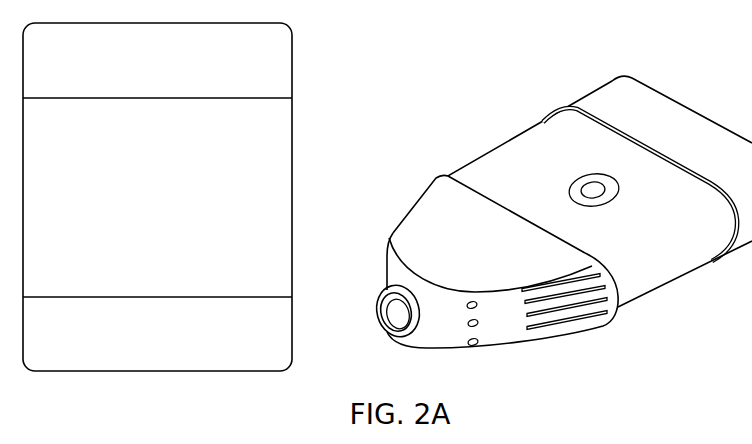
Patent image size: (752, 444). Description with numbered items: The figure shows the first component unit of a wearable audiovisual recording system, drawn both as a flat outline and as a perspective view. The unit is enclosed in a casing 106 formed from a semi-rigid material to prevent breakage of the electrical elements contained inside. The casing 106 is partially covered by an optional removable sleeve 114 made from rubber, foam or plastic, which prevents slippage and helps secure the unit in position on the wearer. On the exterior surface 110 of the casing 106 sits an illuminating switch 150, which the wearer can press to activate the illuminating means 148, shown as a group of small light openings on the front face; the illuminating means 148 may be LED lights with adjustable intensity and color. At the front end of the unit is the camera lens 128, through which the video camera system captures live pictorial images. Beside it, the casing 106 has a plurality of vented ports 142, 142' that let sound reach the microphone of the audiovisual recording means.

The casing 106 is at (273, 157).
The removable sleeve 114 is at (285, 79).
The exterior surface 110 is at (675, 270).
The illuminating switch 150 is at (570, 187).
The camera lens 128 is at (396, 327).
The illuminating means 148 is at (466, 309).
The vented port 142' is at (540, 266).
The vented ports 142 is at (566, 334).